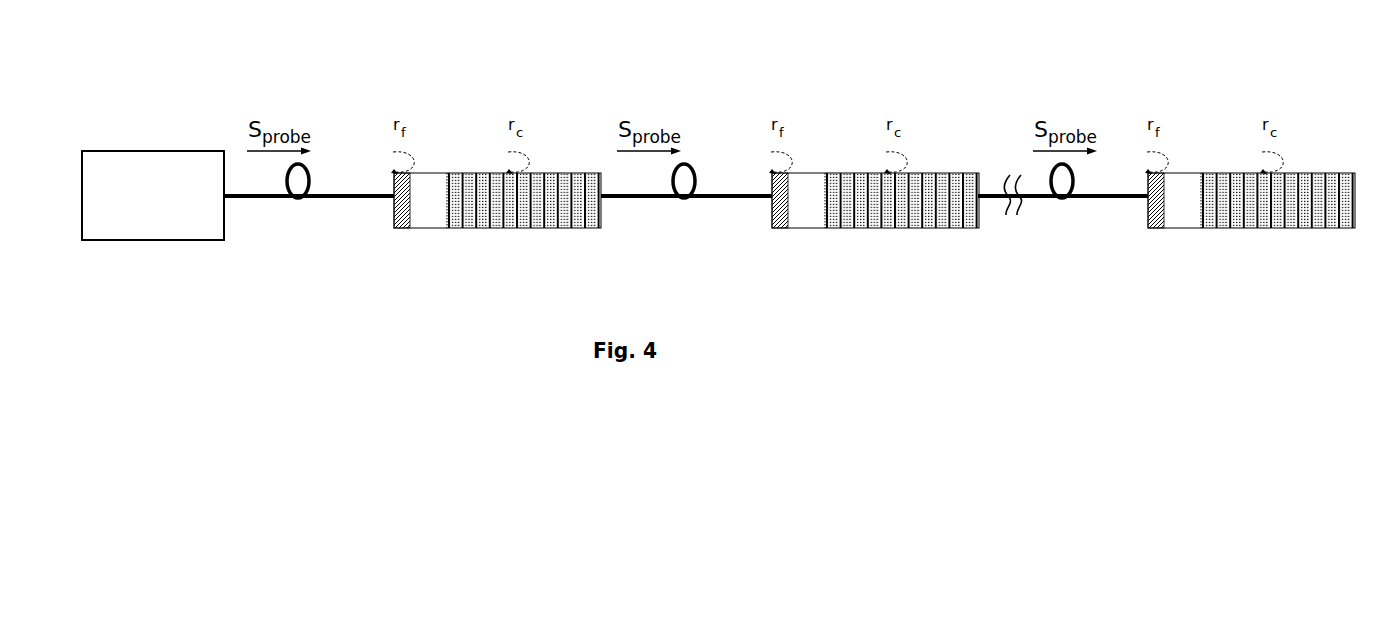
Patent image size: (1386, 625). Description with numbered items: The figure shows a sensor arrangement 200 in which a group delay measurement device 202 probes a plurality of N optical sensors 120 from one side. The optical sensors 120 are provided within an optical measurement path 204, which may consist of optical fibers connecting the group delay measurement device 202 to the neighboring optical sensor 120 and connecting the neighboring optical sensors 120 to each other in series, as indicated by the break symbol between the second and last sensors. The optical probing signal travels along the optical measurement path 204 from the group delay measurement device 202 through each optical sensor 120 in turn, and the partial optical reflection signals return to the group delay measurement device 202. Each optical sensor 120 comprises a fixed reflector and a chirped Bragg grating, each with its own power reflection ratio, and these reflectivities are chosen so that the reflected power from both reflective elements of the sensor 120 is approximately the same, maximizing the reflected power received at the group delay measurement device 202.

The optical sensor 120 is at (443, 232).
The sensor arrangement 200 is at (644, 104).
The group delay measurement device 202 is at (178, 227).
The optical measurement path 204 is at (653, 203).